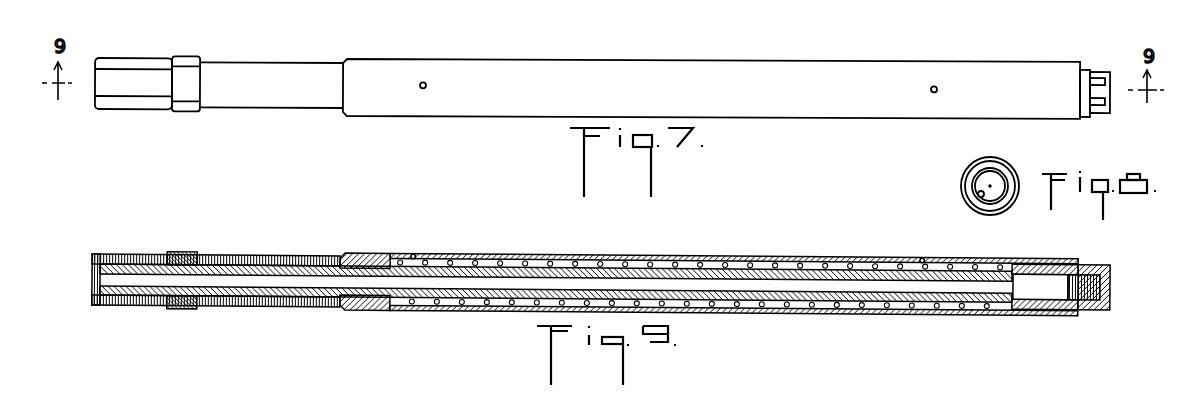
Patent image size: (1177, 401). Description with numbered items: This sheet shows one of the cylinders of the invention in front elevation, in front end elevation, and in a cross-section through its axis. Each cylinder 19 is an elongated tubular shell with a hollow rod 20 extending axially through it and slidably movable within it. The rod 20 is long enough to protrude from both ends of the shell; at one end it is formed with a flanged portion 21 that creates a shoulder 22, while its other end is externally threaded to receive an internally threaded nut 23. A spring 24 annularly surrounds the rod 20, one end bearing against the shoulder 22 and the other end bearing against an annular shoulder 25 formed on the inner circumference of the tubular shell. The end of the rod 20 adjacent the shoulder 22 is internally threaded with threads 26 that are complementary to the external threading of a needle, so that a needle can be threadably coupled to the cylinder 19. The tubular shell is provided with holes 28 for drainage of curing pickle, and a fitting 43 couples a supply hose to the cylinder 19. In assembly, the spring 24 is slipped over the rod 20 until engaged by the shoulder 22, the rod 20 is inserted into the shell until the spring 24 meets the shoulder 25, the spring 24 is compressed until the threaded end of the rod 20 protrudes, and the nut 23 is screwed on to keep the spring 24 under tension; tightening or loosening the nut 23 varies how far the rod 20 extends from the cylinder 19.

In FIG. 7, the cylinder 19 is at (806, 82).
In FIG. 8, the cylinder 19 is at (1020, 171).
In FIG. 9, the cylinder 19 is at (790, 256).
In FIG. 8, the hollow rod 20 is at (974, 178).
In FIG. 9, the hollow rod 20 is at (515, 268).
In FIG. 7, the flanged portion 21 is at (1088, 72).
In FIG. 8, the flanged portion 21 is at (1010, 204).
In FIG. 9, the flanged portion 21 is at (1097, 265).
In FIG. 9, the shoulder 22 is at (1005, 310).
In FIG. 7, the nut 23 is at (186, 92).
In FIG. 9, the nut 23 is at (188, 252).
In FIG. 9, the spring 24 is at (812, 302).
In FIG. 9, the annular shoulder 25 is at (390, 302).
In FIG. 8, the threads 26 is at (978, 192).
In FIG. 9, the threads 26 is at (1100, 292).
In FIG. 7, the holes 28 is at (425, 82).
In FIG. 9, the holes 28 is at (413, 252).
In FIG. 7, the fittings 43 is at (104, 96).
In FIG. 9, the fittings 43 is at (113, 255).